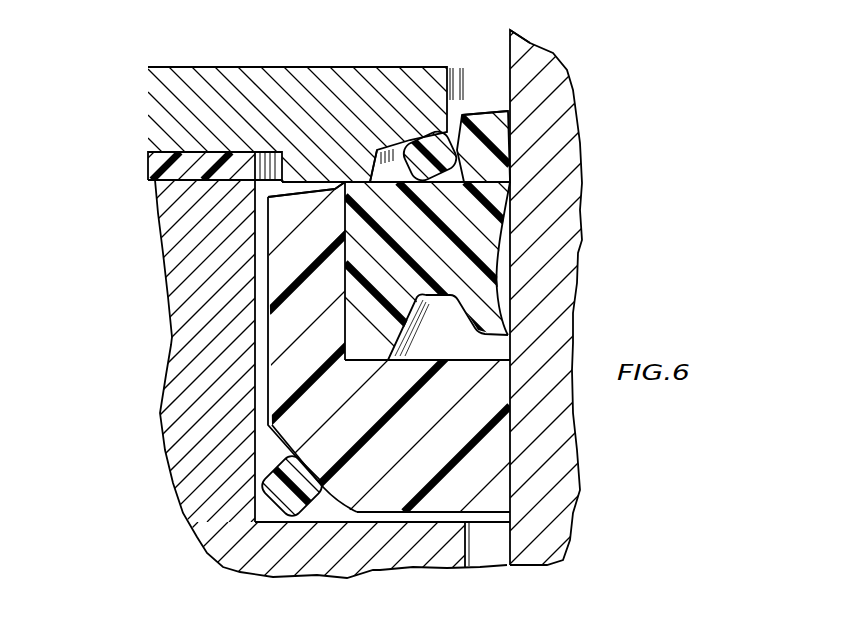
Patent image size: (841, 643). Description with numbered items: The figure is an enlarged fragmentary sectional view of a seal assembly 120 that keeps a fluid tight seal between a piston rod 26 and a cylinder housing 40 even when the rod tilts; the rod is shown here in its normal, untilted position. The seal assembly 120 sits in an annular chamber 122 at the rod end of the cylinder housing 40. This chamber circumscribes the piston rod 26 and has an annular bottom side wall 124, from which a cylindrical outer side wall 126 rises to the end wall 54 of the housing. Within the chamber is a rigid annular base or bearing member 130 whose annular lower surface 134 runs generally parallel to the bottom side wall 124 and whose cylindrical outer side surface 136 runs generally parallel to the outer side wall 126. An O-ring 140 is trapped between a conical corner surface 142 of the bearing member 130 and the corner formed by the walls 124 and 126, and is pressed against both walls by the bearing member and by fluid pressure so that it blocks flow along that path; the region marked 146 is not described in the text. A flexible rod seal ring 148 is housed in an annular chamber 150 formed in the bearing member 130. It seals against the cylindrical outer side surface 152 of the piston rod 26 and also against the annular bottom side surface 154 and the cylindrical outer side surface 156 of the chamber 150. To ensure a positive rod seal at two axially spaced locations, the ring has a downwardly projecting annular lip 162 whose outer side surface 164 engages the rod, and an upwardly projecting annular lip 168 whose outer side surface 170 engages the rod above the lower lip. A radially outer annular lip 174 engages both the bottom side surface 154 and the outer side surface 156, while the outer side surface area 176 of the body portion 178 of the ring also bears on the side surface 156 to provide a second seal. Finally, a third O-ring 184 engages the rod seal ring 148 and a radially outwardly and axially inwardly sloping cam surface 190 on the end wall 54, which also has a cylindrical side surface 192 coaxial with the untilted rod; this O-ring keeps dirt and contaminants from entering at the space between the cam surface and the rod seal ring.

The piston rod 26 is at (575, 66).
The cylinder housing 40 is at (162, 362).
The end wall 54 is at (226, 90).
The seal assembly 120 is at (252, 268).
The annular chamber 122 is at (252, 304).
The bottom side wall 124 is at (343, 516).
The outer side wall 126 is at (257, 244).
The base or bearing member 130 is at (257, 213).
The lower surface 134 is at (397, 518).
The outer side surface 136 is at (253, 222).
The O-ring 140 is at (267, 483).
The conical corner surface 142 is at (272, 440).
The spacer portion 146 is at (476, 546).
The rod seal ring 148 is at (492, 229).
The annular chamber 150 is at (493, 350).
The outer side surface 152 is at (518, 45).
The bottom side surface 154 is at (458, 360).
The outer side surface 156 is at (348, 222).
The annular lip 162 is at (505, 313).
The outer side surface 164 is at (505, 329).
The annular lip 168 is at (480, 152).
The outer side surface 170 is at (508, 142).
The outer annular lip 174 is at (352, 363).
The outer side surface area 176 is at (337, 183).
The body portion 178 is at (378, 273).
The O-ring 184 is at (423, 137).
The cam surface 190 is at (378, 150).
The cylindrical side surface 192 is at (463, 90).